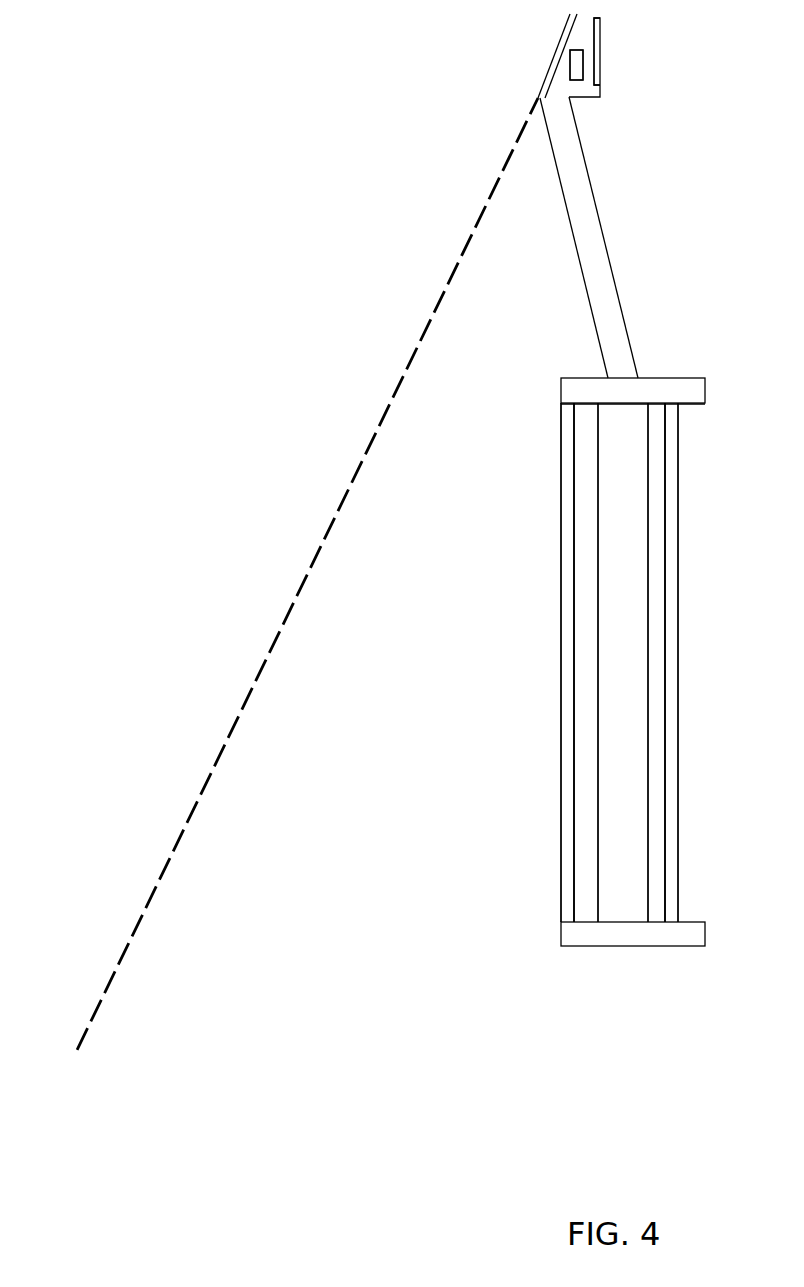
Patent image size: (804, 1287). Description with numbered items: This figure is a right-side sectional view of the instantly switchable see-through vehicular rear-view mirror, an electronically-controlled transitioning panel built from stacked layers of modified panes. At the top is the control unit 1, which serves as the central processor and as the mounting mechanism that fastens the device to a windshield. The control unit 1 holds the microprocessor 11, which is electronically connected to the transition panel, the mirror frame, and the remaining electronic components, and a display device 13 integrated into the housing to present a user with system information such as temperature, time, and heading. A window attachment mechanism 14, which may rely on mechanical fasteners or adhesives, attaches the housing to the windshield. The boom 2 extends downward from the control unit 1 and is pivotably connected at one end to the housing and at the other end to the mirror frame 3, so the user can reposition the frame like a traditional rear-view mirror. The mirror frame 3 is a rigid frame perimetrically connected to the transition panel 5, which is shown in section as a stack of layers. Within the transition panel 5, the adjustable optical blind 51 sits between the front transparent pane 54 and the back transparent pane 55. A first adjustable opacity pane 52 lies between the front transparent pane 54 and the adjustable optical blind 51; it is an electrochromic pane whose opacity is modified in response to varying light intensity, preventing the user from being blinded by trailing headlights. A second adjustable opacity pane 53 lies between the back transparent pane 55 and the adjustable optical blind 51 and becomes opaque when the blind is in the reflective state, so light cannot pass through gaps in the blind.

The control unit 1 is at (618, 90).
The microprocessor 11 is at (576, 66).
The display device 13 is at (598, 62).
The window attachment mechanism 14 is at (565, 34).
The boom 2 is at (622, 267).
The mirror frame 3 is at (664, 374).
The transition panel 5 is at (543, 665).
The adjustable optical blind 51 is at (628, 908).
The first adjustable opacity pane 52 is at (657, 709).
The second adjustable opacity pane 53 is at (582, 717).
The front transparent pane 54 is at (673, 593).
The back transparent pane 55 is at (567, 857).